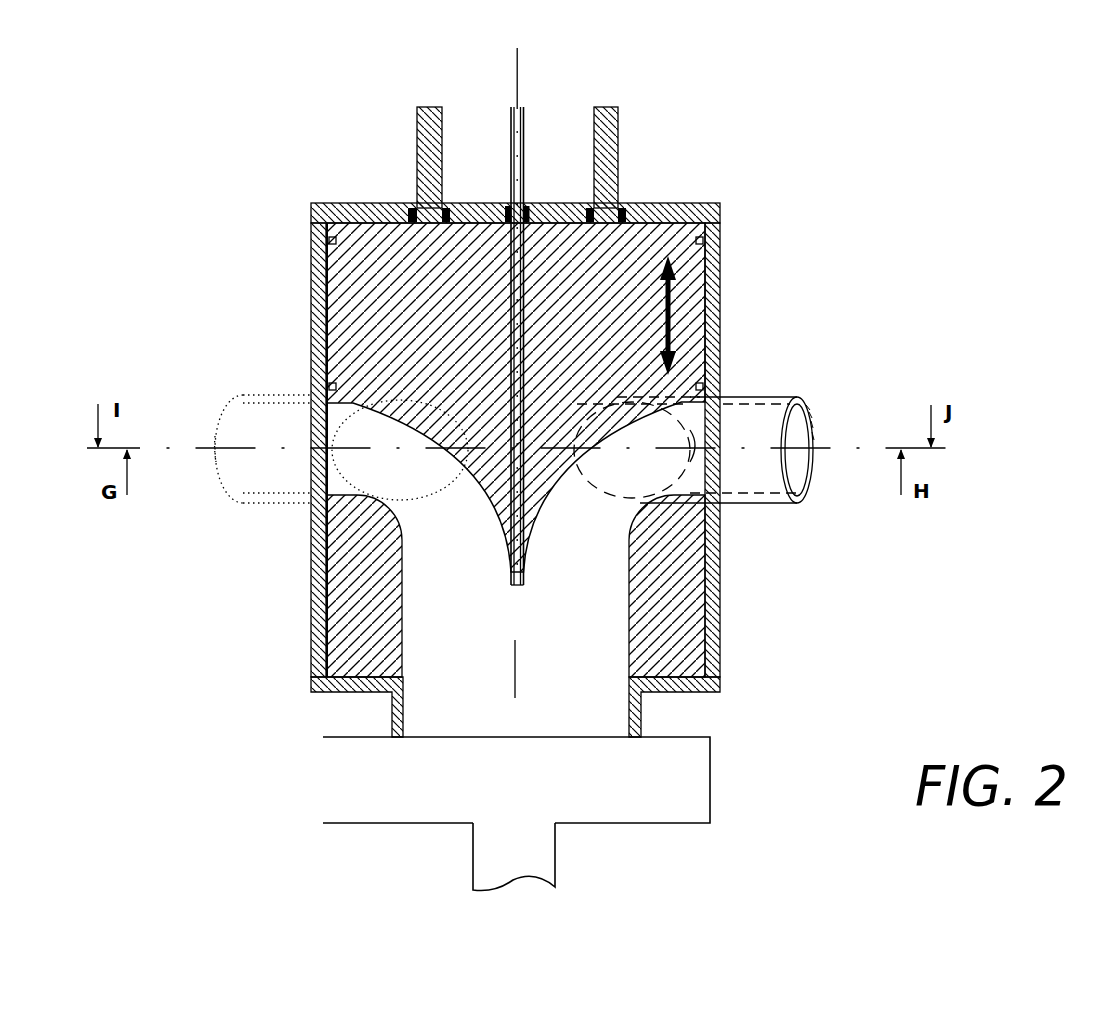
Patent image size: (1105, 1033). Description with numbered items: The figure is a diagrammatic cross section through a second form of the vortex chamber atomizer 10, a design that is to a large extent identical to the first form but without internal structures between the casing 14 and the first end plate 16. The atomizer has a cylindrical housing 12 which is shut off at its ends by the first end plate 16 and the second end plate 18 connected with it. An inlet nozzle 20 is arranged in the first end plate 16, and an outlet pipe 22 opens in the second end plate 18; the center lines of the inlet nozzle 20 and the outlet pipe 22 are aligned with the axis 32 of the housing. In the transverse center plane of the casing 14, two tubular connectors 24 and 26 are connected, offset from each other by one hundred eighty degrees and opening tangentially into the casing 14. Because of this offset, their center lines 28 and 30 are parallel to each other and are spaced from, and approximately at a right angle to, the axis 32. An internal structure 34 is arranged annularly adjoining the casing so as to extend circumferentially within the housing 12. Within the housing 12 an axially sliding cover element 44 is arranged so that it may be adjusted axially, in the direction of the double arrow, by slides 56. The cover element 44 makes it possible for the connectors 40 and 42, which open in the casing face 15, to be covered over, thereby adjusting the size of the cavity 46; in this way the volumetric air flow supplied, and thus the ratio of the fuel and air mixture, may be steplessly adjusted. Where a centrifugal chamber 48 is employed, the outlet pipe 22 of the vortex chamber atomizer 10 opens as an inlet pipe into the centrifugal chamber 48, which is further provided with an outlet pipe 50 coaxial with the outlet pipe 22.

The vortex chamber atomizer 10 is at (738, 220).
The cylindrical housing 12 is at (722, 277).
The casing 14 is at (708, 354).
The casing surface 15 is at (315, 347).
The first end plate 16 is at (688, 204).
The second end plate 18 is at (317, 692).
The inlet nozzle 20 is at (523, 143).
The outlet pipe 22 is at (641, 711).
The tubular connector 24 is at (238, 497).
The tubular connector 26 is at (797, 500).
The center line 28 is at (200, 447).
The center line 30 is at (810, 447).
The housing axis 32 is at (515, 672).
The internal structure 34 is at (337, 600).
The connector 40 is at (683, 462).
The connector 42 is at (362, 473).
The cover element 44 is at (314, 290).
The cavity 46 is at (640, 582).
The centrifugal chamber 48 is at (710, 790).
The outlet pipe 50 is at (556, 862).
The slides 56 is at (417, 133).